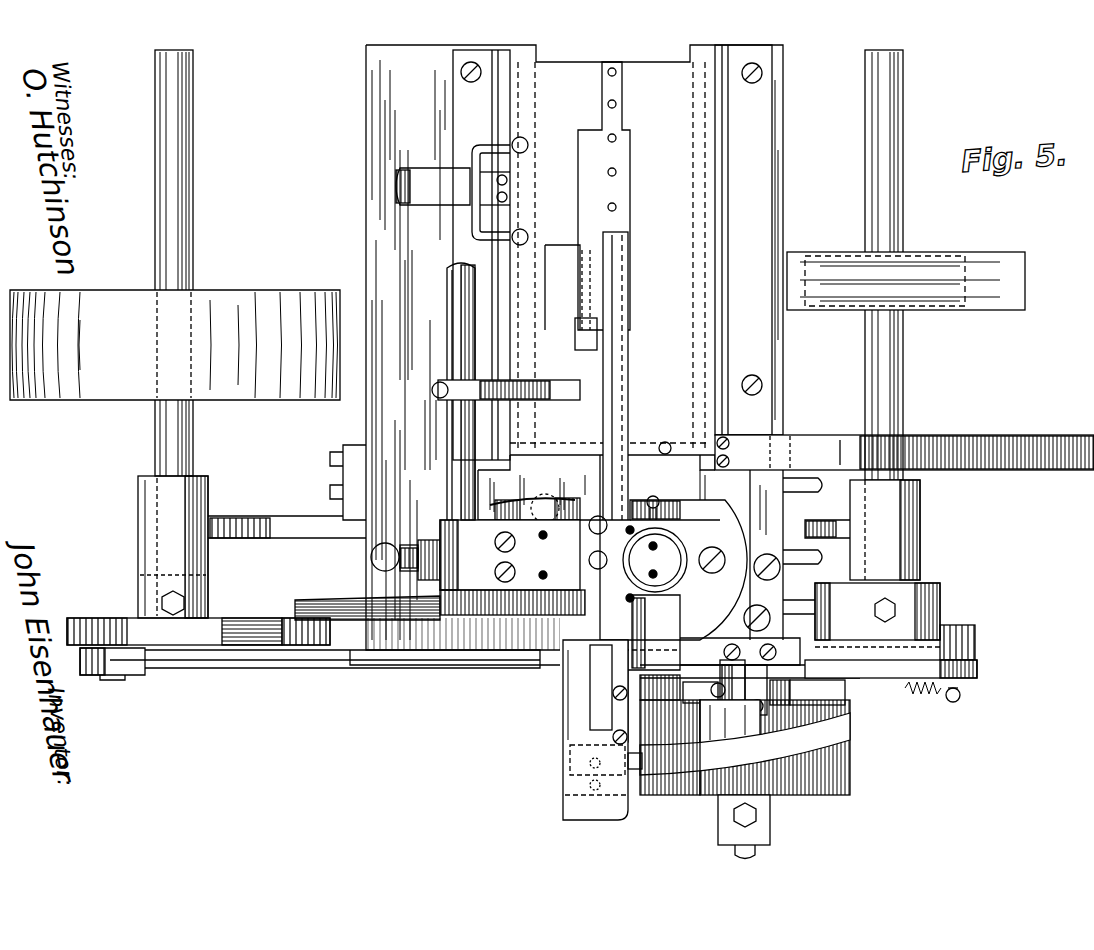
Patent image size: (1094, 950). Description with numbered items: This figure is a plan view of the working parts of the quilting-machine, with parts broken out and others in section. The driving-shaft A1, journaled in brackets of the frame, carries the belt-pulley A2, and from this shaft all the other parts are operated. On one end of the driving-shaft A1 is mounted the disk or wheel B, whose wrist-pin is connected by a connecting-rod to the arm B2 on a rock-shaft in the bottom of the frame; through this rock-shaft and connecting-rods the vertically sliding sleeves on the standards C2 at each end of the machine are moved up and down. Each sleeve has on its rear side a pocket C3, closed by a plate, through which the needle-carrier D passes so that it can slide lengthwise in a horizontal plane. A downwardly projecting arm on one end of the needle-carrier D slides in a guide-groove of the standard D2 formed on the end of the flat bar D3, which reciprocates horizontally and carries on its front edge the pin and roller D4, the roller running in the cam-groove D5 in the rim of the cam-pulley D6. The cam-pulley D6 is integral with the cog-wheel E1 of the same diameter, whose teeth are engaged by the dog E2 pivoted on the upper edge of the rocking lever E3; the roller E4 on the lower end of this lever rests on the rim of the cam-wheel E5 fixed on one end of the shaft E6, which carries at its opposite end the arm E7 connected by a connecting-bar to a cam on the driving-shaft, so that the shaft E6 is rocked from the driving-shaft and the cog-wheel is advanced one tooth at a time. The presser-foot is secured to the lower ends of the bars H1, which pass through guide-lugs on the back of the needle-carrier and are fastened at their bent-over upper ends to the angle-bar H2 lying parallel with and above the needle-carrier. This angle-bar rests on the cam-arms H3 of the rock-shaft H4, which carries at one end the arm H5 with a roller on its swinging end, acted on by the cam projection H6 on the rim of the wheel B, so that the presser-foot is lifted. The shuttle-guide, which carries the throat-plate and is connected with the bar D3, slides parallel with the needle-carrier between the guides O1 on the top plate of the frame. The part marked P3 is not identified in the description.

The driving-shaft A1 is at (193, 262).
The belt-pulley A2 is at (175, 345).
The disk or wheel B is at (198, 617).
The arm B2 is at (265, 670).
The cam projection H6 is at (252, 616).
The arm H5 is at (367, 596).
The rock-shaft H4 is at (446, 391).
The cam-arms H3 is at (506, 379).
The angle-bar H2 is at (571, 297).
The bars H1 is at (630, 180).
The guides O1 is at (612, 252).
The needle-carrier D is at (628, 260).
The standard D2 is at (576, 730).
The flat bar D3 is at (568, 757).
The pin and roller D4 is at (640, 770).
The cam-groove D5 is at (850, 736).
The cam-pulley D6 is at (775, 779).
The pocket C3 is at (694, 583).
The standards C2 is at (655, 564).
The shaft E6 is at (904, 315).
The cam-wheel E5 is at (877, 615).
The roller E4 is at (969, 642).
The rocking lever E3 is at (977, 669).
The dog E2 is at (817, 692).
The arm E7 is at (700, 692).
The cog-wheel E1 is at (670, 735).
The box P3 is at (906, 281).